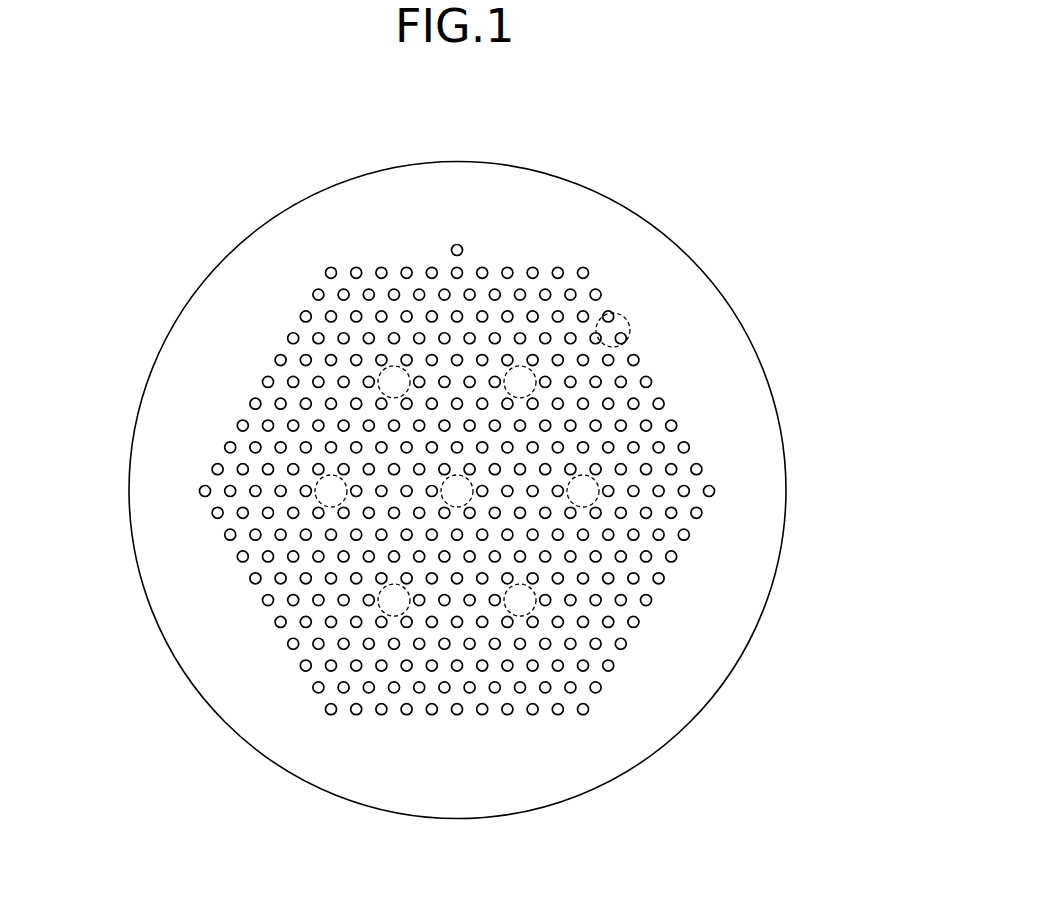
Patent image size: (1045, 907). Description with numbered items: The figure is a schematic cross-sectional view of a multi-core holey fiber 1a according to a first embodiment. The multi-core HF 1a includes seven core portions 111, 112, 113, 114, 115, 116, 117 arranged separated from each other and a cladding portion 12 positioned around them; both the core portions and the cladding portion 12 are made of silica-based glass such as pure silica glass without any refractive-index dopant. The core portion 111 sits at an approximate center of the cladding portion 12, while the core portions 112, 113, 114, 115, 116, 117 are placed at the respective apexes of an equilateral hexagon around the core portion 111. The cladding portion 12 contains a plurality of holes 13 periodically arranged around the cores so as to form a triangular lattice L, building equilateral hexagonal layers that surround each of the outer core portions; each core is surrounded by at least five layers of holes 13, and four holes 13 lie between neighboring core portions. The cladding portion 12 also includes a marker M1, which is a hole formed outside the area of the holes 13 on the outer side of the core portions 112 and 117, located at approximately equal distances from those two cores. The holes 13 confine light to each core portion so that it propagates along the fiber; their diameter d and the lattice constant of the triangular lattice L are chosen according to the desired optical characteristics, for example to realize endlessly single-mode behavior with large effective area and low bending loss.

The multi-core holey fiber 1a is at (712, 208).
The cladding portion 12 is at (718, 660).
The holes 13 is at (716, 495).
The core portion 111 is at (457, 475).
The core portion 112 is at (520, 366).
The core portion 113 is at (599, 488).
The core portion 114 is at (521, 616).
The core portion 115 is at (394, 616).
The core portion 116 is at (316, 488).
The core portion 117 is at (392, 366).
The marker M1 is at (445, 245).
The triangular lattice L is at (620, 347).
The diameter of the holes d is at (561, 251).